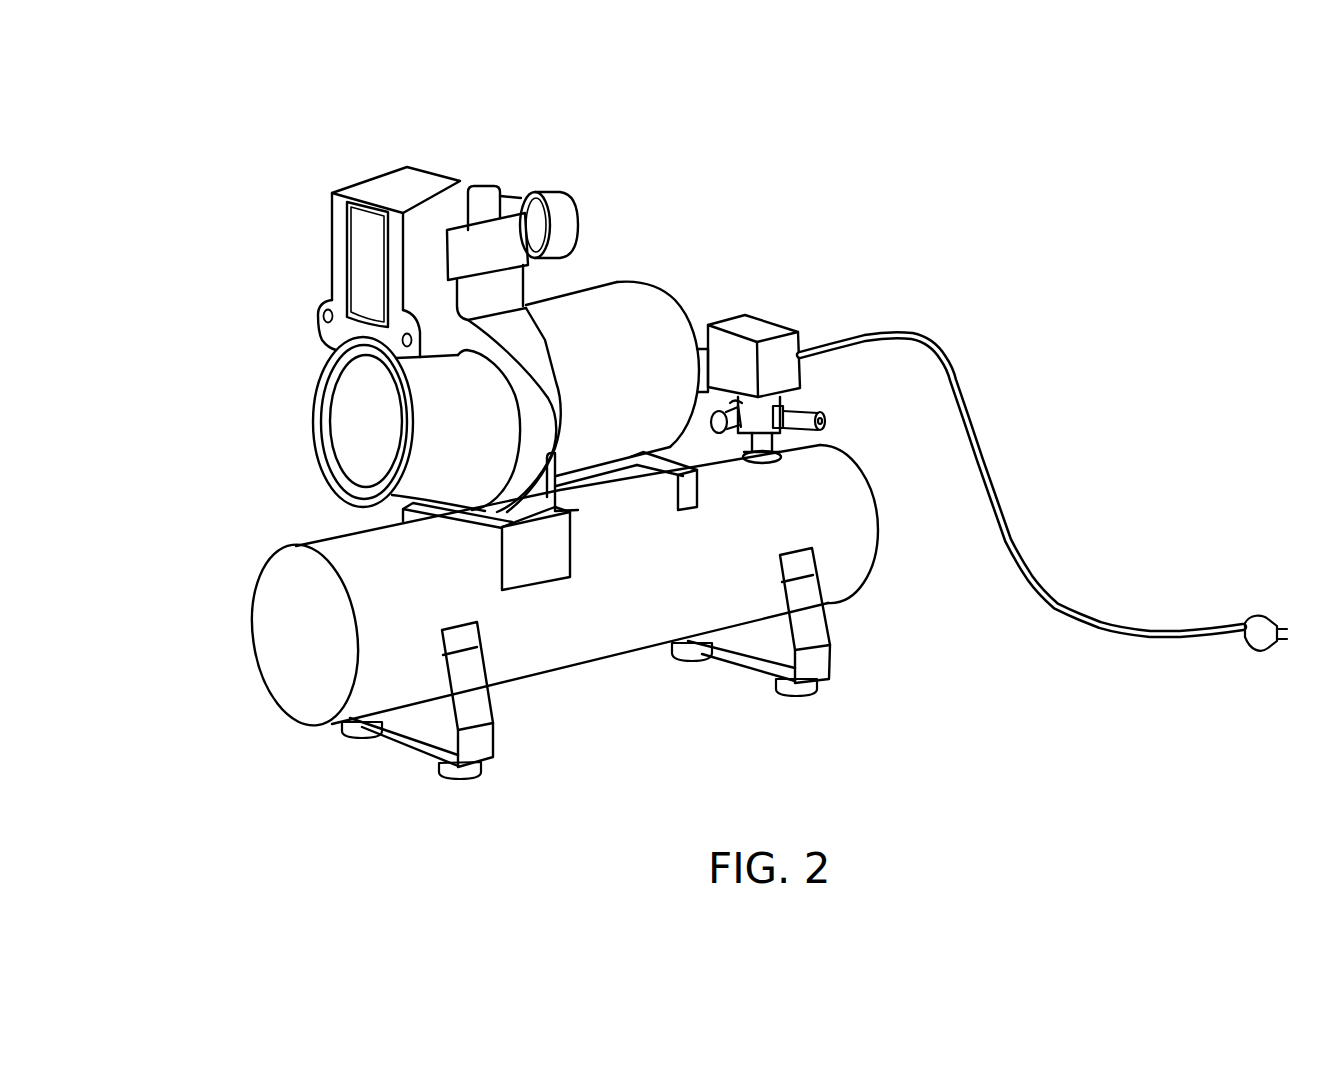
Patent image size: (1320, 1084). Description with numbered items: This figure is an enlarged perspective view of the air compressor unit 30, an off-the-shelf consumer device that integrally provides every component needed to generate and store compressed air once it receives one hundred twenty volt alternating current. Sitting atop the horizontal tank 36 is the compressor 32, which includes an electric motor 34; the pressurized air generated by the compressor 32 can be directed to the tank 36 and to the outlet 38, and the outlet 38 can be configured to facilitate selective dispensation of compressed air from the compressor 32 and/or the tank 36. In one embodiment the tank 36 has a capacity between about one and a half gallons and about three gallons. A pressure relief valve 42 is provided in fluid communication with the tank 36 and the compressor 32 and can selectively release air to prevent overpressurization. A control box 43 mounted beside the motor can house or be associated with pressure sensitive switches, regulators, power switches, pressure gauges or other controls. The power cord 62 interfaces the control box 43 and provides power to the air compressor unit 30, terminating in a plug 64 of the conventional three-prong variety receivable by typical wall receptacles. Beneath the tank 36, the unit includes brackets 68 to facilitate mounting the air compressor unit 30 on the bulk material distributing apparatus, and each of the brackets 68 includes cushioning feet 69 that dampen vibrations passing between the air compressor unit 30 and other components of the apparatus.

The air compressor unit 30 is at (208, 187).
The compressor 32 is at (296, 387).
The electric motor 34 is at (617, 275).
The tank 36 is at (559, 588).
The outlet 38 is at (826, 421).
The pressure relief valve 42 is at (725, 438).
The control box 43 is at (793, 302).
The power cord 62 is at (1093, 612).
The plug 64 is at (1267, 615).
The brackets 68 is at (392, 768).
The cushioning feet 69 is at (343, 730).